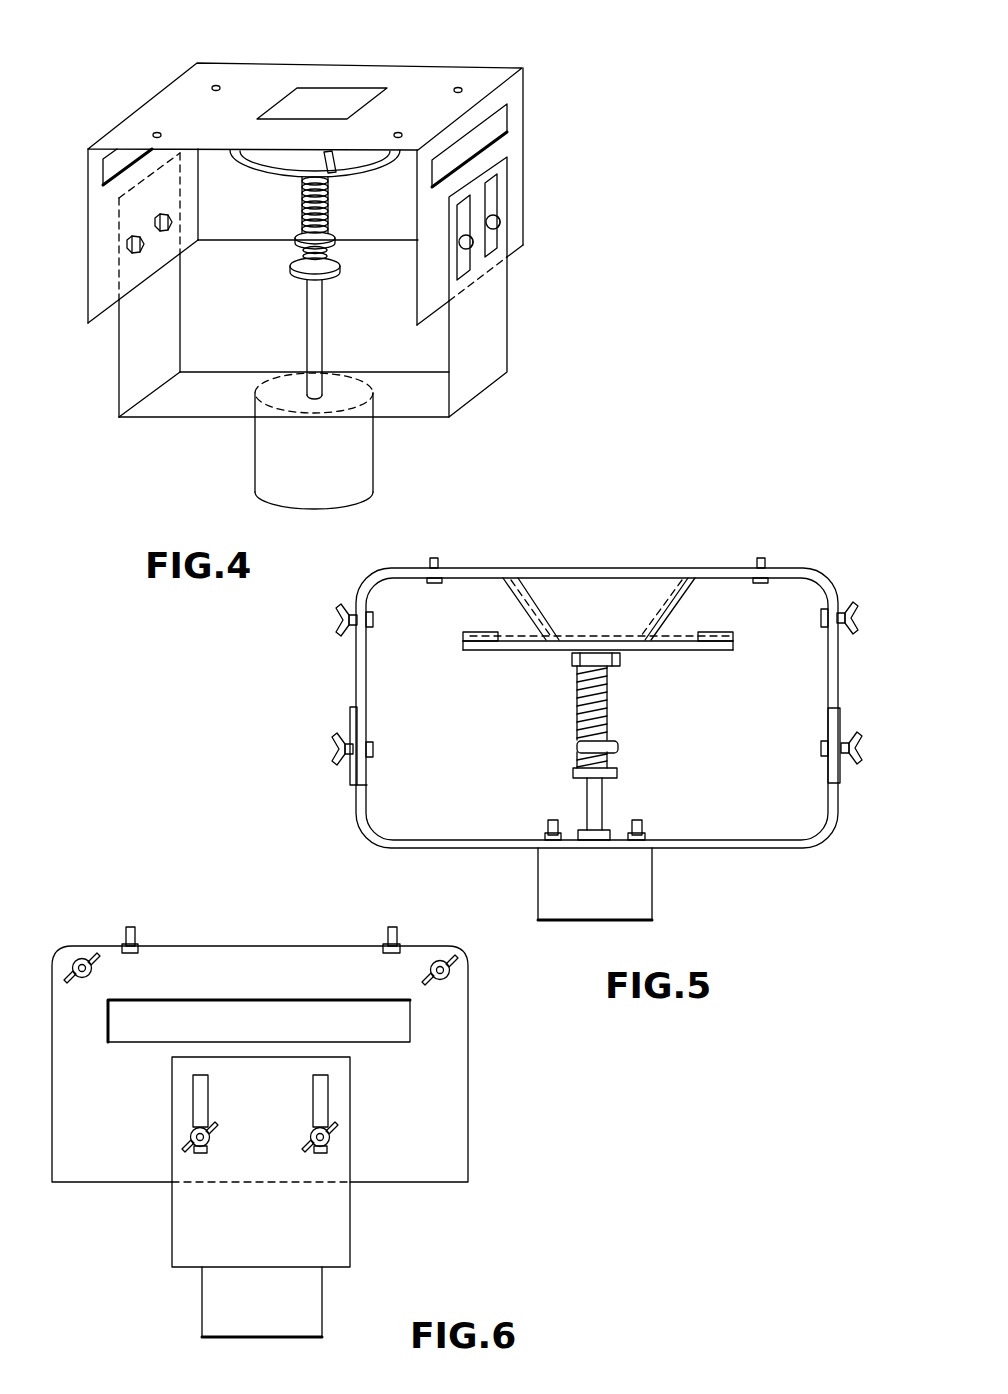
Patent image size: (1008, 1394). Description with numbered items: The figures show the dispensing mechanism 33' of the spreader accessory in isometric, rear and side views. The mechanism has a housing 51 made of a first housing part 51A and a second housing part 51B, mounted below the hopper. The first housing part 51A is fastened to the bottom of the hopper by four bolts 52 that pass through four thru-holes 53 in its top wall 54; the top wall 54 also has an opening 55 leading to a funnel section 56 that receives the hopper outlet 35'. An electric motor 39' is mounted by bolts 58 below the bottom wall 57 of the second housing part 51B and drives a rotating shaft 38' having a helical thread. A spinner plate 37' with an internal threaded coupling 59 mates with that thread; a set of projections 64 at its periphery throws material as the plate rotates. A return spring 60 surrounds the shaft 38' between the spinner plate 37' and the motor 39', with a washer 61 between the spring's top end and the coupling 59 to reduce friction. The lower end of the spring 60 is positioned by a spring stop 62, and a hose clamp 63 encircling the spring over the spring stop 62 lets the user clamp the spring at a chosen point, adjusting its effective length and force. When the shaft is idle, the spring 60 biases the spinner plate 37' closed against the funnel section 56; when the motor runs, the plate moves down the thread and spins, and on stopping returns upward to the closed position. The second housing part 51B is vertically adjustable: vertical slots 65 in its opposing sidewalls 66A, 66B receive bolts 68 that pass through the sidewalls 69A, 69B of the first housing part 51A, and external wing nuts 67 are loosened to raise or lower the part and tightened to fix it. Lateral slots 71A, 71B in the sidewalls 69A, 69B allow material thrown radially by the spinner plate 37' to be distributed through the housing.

In FIG. 4, the dispensing mechanism 33' is at (624, 163).
In FIG. 5, the outlet 35' is at (601, 583).
In FIG. 4, the spinner plate 37' is at (313, 186).
In FIG. 5, the spinner plate 37' is at (595, 668).
In FIG. 4, the rotating shaft 38' is at (345, 339).
In FIG. 5, the rotating shaft 38' is at (566, 809).
In FIG. 4, the electric motor 39' is at (344, 441).
In FIG. 5, the electric motor 39' is at (628, 884).
In FIG. 6, the electric motor 39' is at (297, 1302).
In FIG. 4, the housing 51 is at (133, 130).
In FIG. 4, the first housing part 51A is at (95, 275).
In FIG. 5, the first housing part 51A is at (413, 570).
In FIG. 6, the first housing part 51A is at (470, 1082).
In FIG. 4, the second housing part 51B is at (492, 316).
In FIG. 5, the second housing part 51B is at (398, 848).
In FIG. 6, the second housing part 51B is at (352, 1240).
In FIG. 5, the bolts 52 is at (437, 558).
In FIG. 6, the bolts 52 is at (137, 935).
In FIG. 4, the thru-holes 53 is at (212, 88).
In FIG. 4, the top wall 54 is at (475, 72).
In FIG. 4, the opening 55 is at (341, 96).
In FIG. 5, the opening 55 is at (603, 566).
In FIG. 5, the funnel section 56 is at (683, 600).
In FIG. 4, the bottom wall 57 is at (200, 398).
In FIG. 5, the bottom wall 57 is at (470, 850).
In FIG. 5, the bolts 58 is at (548, 826).
In FIG. 5, the internal threaded coupling 59 is at (620, 660).
In FIG. 4, the return spring 60 is at (330, 206).
In FIG. 5, the return spring 60 is at (610, 728).
In FIG. 5, the washer 61 is at (572, 658).
In FIG. 4, the spring stop 62 is at (340, 264).
In FIG. 5, the spring stop 62 is at (618, 773).
In FIG. 4, the hose clamp 63 is at (297, 240).
In FIG. 5, the hose clamp 63 is at (577, 746).
In FIG. 4, the projections 64 is at (326, 152).
In FIG. 5, the projections 64 is at (478, 632).
In FIG. 4, the vertical slots 65 is at (463, 262).
In FIG. 6, the vertical slots 65 is at (313, 1087).
In FIG. 4, the sidewall 66A is at (473, 368).
In FIG. 5, the sidewall 66A is at (842, 800).
In FIG. 6, the sidewall 66A is at (190, 1243).
In FIG. 4, the sidewall 66B is at (135, 343).
In FIG. 5, the sidewall 66B is at (352, 790).
In FIG. 5, the wing nuts 67 is at (337, 748).
In FIG. 6, the wing nuts 67 is at (189, 1133).
In FIG. 4, the bolts 68 is at (165, 226).
In FIG. 5, the bolts 68 is at (375, 749).
In FIG. 4, the sidewall 69A is at (512, 142).
In FIG. 5, the sidewall 69A is at (870, 677).
In FIG. 6, the sidewall 69A is at (450, 1143).
In FIG. 4, the sidewall 69B is at (88, 243).
In FIG. 5, the sidewall 69B is at (356, 688).
In FIG. 4, the lateral slot 71A is at (497, 120).
In FIG. 6, the lateral slot 71A is at (258, 1020).
In FIG. 4, the lateral slot 71B is at (110, 167).